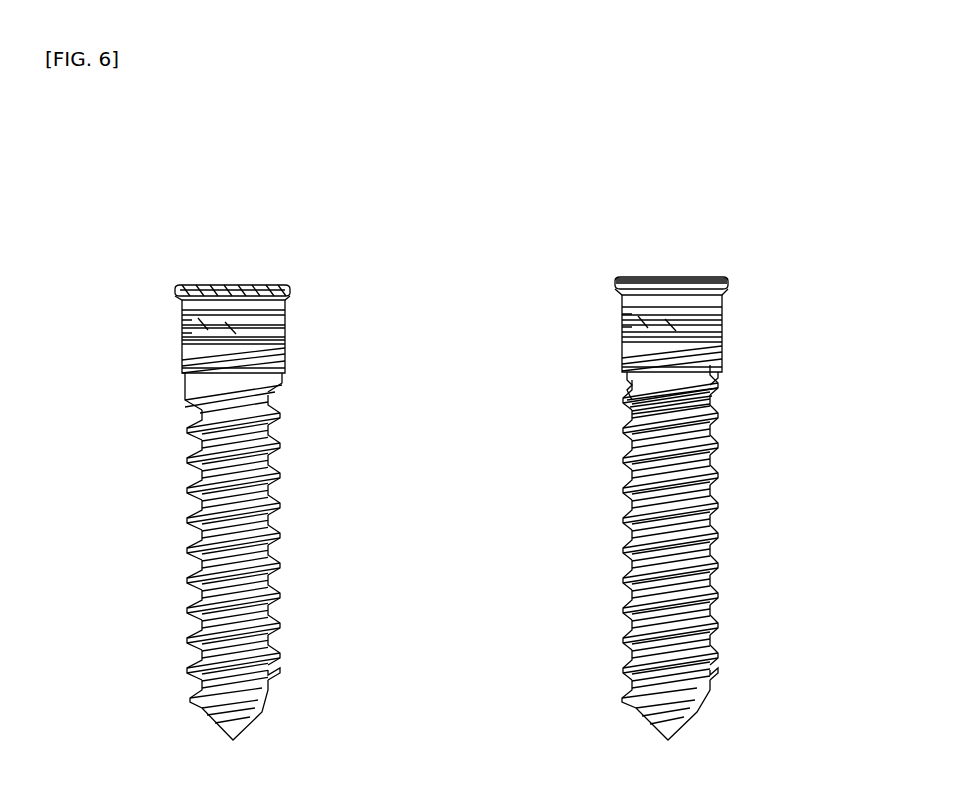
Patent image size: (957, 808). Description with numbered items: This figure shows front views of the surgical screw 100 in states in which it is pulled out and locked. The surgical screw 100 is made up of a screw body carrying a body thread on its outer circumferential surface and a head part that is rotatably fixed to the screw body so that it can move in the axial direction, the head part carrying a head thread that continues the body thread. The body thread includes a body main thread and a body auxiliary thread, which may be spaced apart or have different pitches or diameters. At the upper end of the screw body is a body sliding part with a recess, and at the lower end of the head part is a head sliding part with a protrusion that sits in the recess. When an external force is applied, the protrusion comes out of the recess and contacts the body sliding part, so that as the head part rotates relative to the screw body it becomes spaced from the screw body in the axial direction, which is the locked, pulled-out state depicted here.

The surgical screw 100 is at (508, 141).